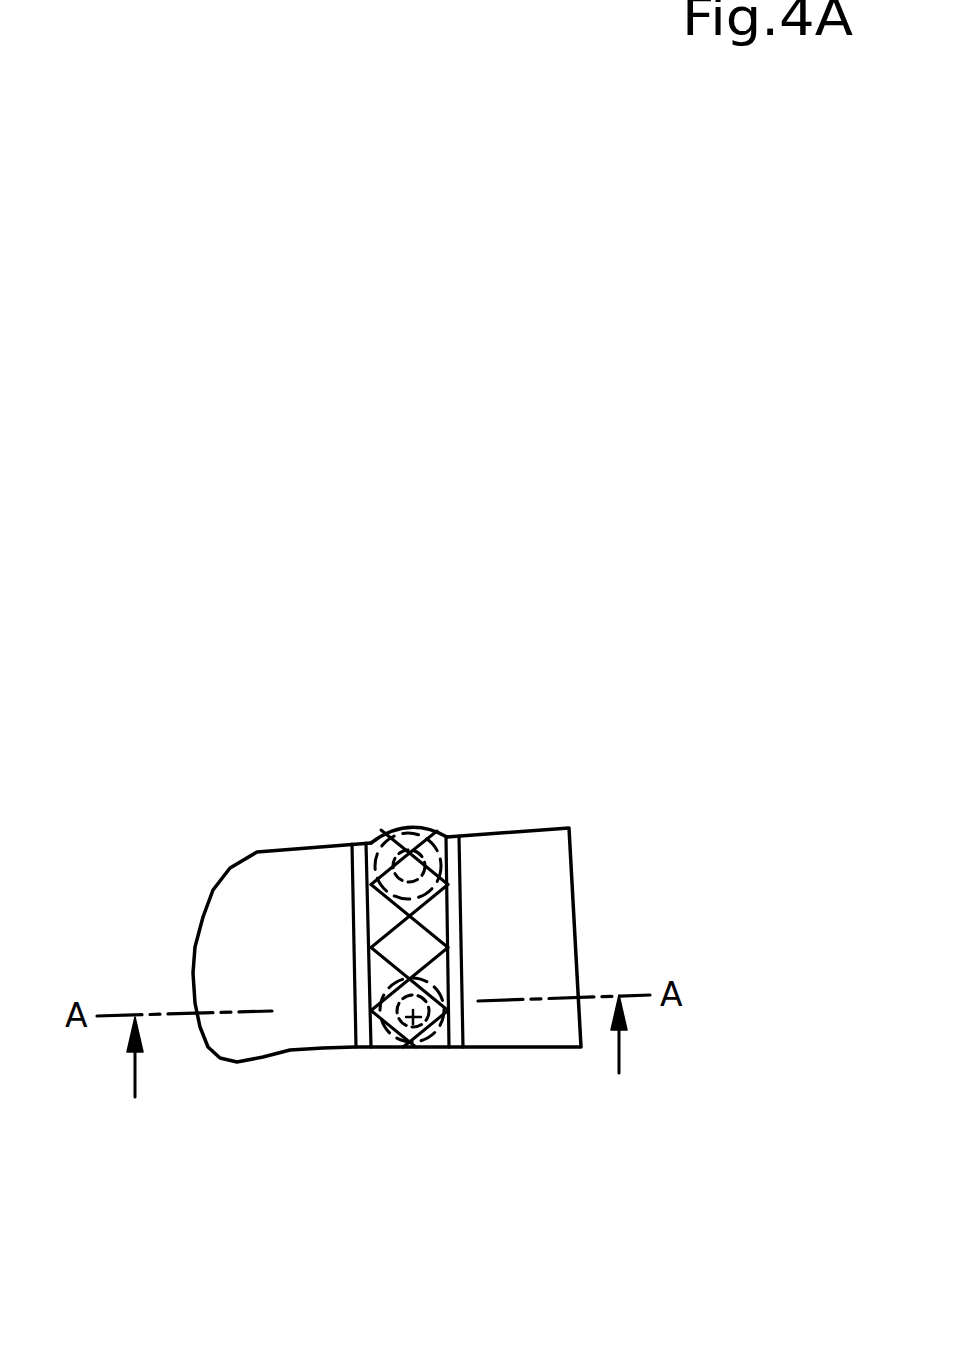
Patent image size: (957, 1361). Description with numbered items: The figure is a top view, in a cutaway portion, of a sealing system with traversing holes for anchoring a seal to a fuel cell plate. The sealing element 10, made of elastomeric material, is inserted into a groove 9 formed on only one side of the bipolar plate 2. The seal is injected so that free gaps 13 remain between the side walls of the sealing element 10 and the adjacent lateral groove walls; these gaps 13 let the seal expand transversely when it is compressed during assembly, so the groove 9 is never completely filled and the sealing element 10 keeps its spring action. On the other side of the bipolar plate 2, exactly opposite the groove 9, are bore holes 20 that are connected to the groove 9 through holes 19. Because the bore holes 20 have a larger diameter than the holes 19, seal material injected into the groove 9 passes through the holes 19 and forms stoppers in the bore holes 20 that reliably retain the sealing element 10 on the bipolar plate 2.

The bipolar plate 2 is at (240, 947).
The groove 9 is at (365, 993).
The sealing element 10 is at (430, 915).
The free gap 13 is at (449, 866).
The hole 19 is at (413, 853).
The bore hole 20 is at (382, 837).